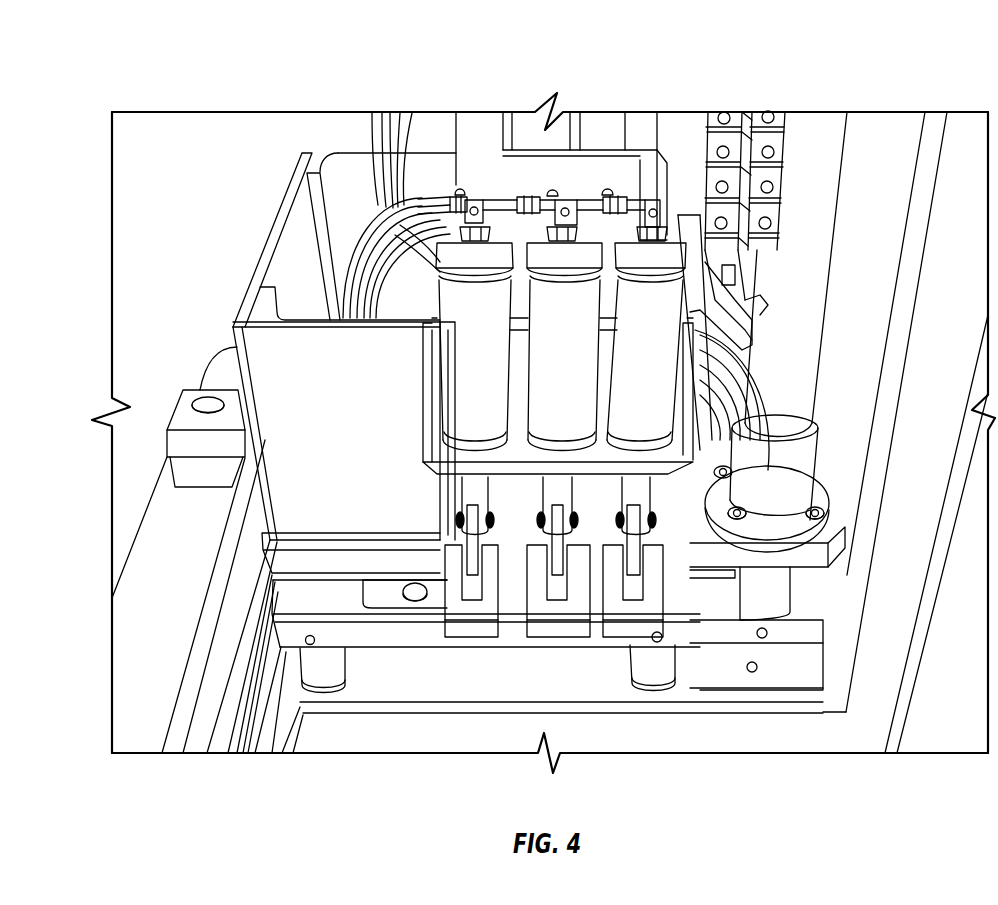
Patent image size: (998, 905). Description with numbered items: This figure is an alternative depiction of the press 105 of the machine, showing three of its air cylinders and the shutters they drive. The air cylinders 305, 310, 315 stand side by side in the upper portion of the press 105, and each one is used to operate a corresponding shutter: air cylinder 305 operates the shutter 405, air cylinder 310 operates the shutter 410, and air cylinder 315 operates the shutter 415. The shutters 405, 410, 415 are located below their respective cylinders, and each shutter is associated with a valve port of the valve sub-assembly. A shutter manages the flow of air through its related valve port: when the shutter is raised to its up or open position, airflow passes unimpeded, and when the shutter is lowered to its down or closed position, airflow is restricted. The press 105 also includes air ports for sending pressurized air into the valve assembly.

The press 105 is at (732, 78).
The air cylinder 305 is at (645, 203).
The air cylinder 310 is at (566, 203).
The air cylinder 315 is at (473, 200).
The shutter 405 is at (618, 612).
The shutter 410 is at (566, 612).
The shutter 415 is at (468, 610).